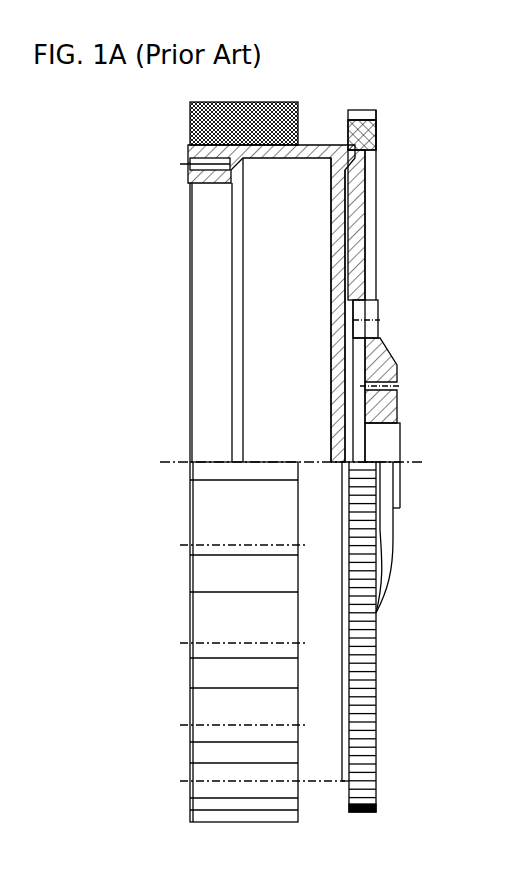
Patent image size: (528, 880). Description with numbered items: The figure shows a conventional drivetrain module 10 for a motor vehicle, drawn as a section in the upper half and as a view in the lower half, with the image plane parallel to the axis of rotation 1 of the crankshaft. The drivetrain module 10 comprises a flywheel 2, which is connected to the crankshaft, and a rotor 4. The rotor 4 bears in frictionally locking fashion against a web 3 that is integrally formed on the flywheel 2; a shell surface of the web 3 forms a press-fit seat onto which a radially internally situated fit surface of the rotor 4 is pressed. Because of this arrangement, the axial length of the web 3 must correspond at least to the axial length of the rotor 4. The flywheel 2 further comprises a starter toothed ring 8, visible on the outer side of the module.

The drivetrain module 10 is at (57, 131).
The rotor 4 is at (206, 118).
The web 3 is at (270, 158).
The starter toothed ring 8 is at (362, 135).
The flywheel 2 is at (362, 278).
The axis of rotation 1 is at (415, 463).